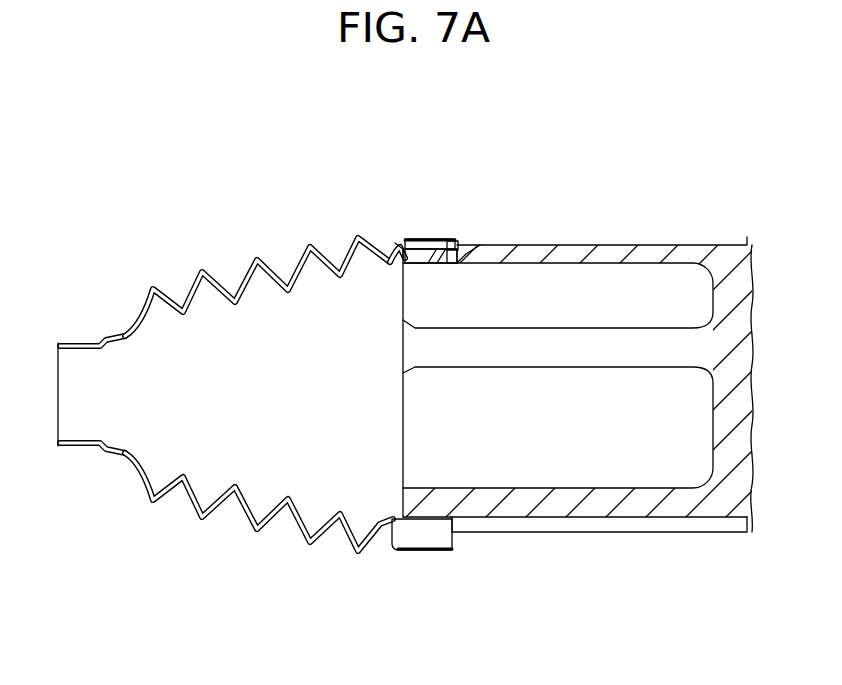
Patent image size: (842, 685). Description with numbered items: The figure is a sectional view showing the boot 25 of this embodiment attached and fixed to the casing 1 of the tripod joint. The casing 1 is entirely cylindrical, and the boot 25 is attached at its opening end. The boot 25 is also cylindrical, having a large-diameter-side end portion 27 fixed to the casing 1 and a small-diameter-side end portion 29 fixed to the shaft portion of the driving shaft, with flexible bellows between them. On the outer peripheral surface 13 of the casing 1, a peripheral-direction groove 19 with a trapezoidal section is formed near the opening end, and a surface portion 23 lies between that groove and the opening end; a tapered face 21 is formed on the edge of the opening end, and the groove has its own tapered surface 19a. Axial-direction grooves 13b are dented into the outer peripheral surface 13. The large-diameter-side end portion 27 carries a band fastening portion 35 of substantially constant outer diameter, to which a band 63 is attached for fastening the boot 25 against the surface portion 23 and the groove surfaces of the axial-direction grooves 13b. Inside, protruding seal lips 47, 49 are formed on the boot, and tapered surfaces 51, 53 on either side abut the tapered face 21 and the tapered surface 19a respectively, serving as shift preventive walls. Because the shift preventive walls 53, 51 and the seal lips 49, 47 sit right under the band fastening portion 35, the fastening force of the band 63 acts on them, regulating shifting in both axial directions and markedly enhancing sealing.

The casing 1 is at (524, 364).
The outer peripheral surface 13 is at (612, 245).
The axial-direction groove 13b is at (562, 535).
The peripheral-direction groove 19 is at (473, 260).
The tapered surface 19a is at (447, 257).
The tapered face 21 is at (393, 244).
The surface portion (protrusion) 23 is at (447, 246).
The boot 25 is at (225, 401).
The large-diameter-side end portion 27 is at (418, 533).
The small-diameter-side end portion 29 is at (66, 342).
The band fastening portion 35 is at (413, 238).
The seal lip 47 is at (437, 250).
The seal lip 49 is at (431, 266).
The tapered surface 51 is at (457, 250).
The tapered surface 53 is at (396, 246).
The band 63 is at (427, 244).